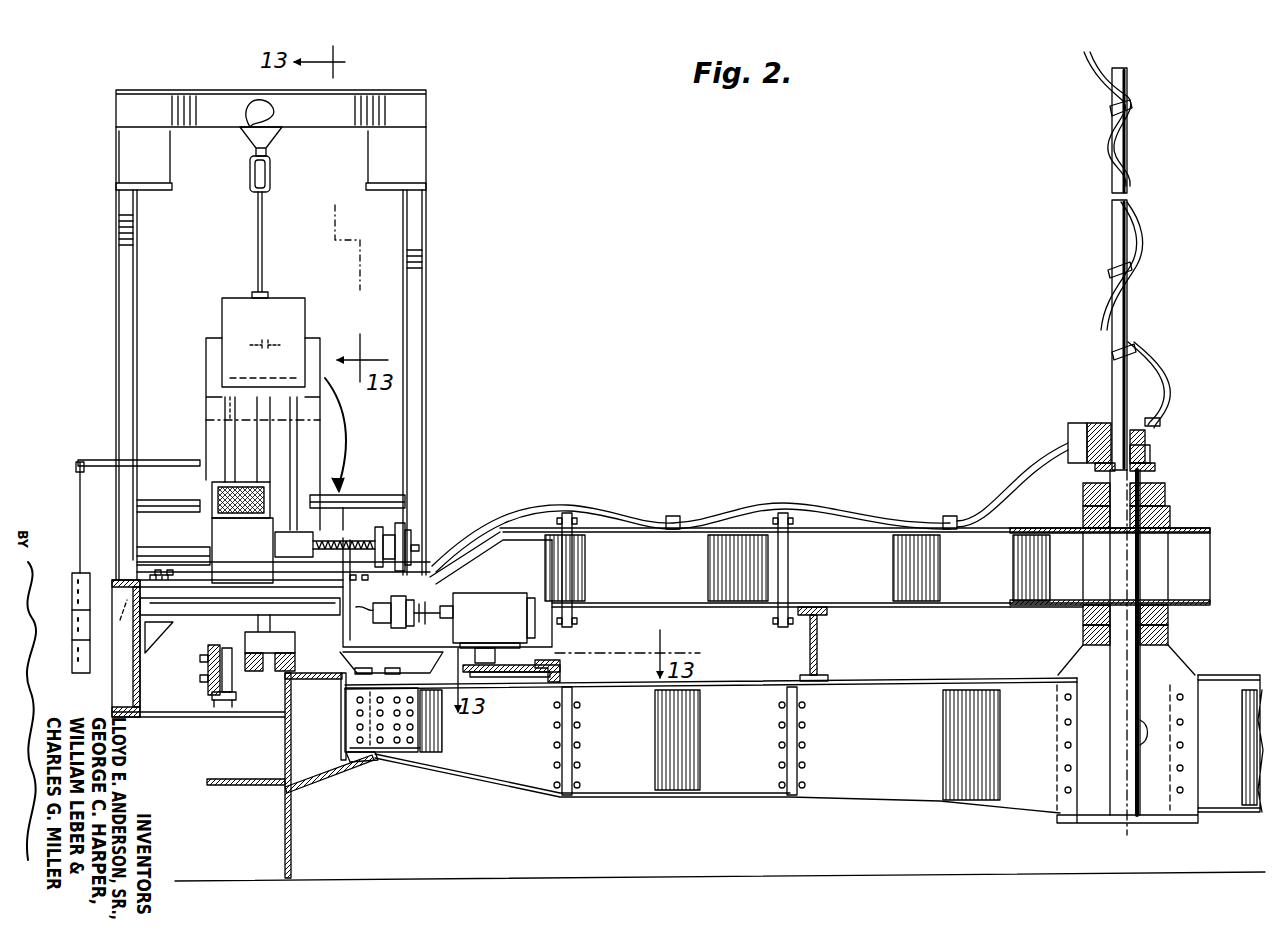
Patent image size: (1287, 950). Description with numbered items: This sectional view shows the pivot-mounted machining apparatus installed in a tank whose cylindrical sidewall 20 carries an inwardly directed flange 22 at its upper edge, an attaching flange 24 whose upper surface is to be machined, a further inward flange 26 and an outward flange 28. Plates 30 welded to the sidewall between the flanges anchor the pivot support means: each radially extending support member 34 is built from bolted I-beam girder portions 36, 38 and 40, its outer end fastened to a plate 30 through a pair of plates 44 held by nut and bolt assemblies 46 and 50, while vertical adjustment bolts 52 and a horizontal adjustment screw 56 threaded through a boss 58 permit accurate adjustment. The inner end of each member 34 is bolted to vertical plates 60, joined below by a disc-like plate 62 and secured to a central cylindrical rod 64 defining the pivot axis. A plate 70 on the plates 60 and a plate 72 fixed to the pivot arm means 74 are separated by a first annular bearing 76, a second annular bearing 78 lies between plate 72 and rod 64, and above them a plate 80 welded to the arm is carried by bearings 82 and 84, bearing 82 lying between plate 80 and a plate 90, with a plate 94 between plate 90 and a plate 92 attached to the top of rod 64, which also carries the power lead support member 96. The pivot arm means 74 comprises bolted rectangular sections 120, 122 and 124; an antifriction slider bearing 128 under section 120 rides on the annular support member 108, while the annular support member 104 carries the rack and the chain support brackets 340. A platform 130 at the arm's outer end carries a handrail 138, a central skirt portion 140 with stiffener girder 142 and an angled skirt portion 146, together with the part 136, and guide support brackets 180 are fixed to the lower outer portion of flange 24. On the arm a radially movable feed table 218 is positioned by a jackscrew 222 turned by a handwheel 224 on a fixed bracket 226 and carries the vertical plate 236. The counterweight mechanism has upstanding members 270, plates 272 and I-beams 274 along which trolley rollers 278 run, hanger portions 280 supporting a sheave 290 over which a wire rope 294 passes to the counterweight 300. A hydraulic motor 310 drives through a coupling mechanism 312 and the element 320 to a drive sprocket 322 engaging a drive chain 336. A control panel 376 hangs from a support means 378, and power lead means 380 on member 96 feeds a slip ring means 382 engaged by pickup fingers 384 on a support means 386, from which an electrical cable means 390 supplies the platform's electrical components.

The sidewall 20 is at (292, 841).
The radially inwardly directed flange 22 is at (313, 704).
The attaching flange 24 is at (290, 657).
The radially inwardly directed flange 26 is at (312, 790).
The radially outwardly directed flange 28 is at (246, 803).
The plate 30 is at (353, 762).
The radially extending support member 34 is at (709, 812).
The girder portion 36 is at (518, 792).
The girder portion 38 is at (597, 792).
The girder portion 40 is at (872, 798).
The plate 44 is at (419, 736).
The nut and bolt assembly 46 is at (392, 753).
The nut and bolt assembly 50 is at (357, 726).
The vertical adjustment bolt 52 is at (316, 682).
The horizontal adjustment screw 56 is at (383, 670).
The boss 58 is at (397, 675).
The vertically extending plate 60 is at (1075, 661).
The disc-like plate 62 is at (1075, 824).
The cylindrical rod 64 is at (1138, 742).
The plate 70 is at (1172, 640).
The plate 72 is at (1166, 600).
The pivot arm means 74 is at (1222, 548).
The first annular bearing 76 is at (1083, 622).
The second annular bearing 78 is at (1102, 600).
The plate 80 is at (1170, 527).
The first annular bearing 82 is at (1168, 510).
The second annular bearing 84 is at (1153, 566).
The plate 90 is at (1166, 490).
The plate 92 is at (1152, 450).
The plate 94 is at (1162, 466).
The power lead support member 96 is at (1118, 380).
The annular support member 104 is at (565, 668).
The annular support member 108 is at (820, 652).
The pivot arm section 120 is at (945, 602).
The pivot arm section 122 is at (692, 594).
The pivot arm section 124 is at (475, 556).
The antifriction means 128 is at (820, 606).
The platform 130 is at (138, 578).
The horizontal bar 136 is at (196, 602).
The handrail 138 is at (165, 462).
The central skirt portion 140 is at (131, 688).
The stiffener girder 142 is at (153, 645).
The depending skirt portion 146 is at (175, 702).
The guide support bracket 180 is at (248, 700).
The feed table 218 is at (272, 543).
The jackscrew 222 is at (332, 546).
The handwheel 224 is at (406, 540).
The fixed bracket 226 is at (362, 497).
The vertically extending plate 236 is at (212, 406).
The vertically upstanding member 270 is at (118, 290).
The plate 272 is at (125, 156).
The I-beam 274 is at (415, 104).
The roller 278 is at (276, 112).
The hanger portion 280 is at (270, 138).
The sheave 290 is at (272, 172).
The wire rope 294 is at (263, 228).
The counterweight 300 is at (284, 306).
The hydraulic motor 310 is at (414, 601).
The coupling mechanism 312 is at (447, 592).
The motor 320 is at (497, 600).
The drive sprocket 322 is at (510, 683).
The drive chain 336 is at (548, 680).
The chain support bracket 340 is at (560, 690).
The control panel 376 is at (70, 588).
The support means 378 is at (80, 460).
The power lead means 380 is at (1136, 116).
The slip ring means 382 is at (1152, 430).
The pickup finger 384 is at (1076, 424).
The support means 386 is at (1072, 460).
The electrical cable means 390 is at (838, 512).